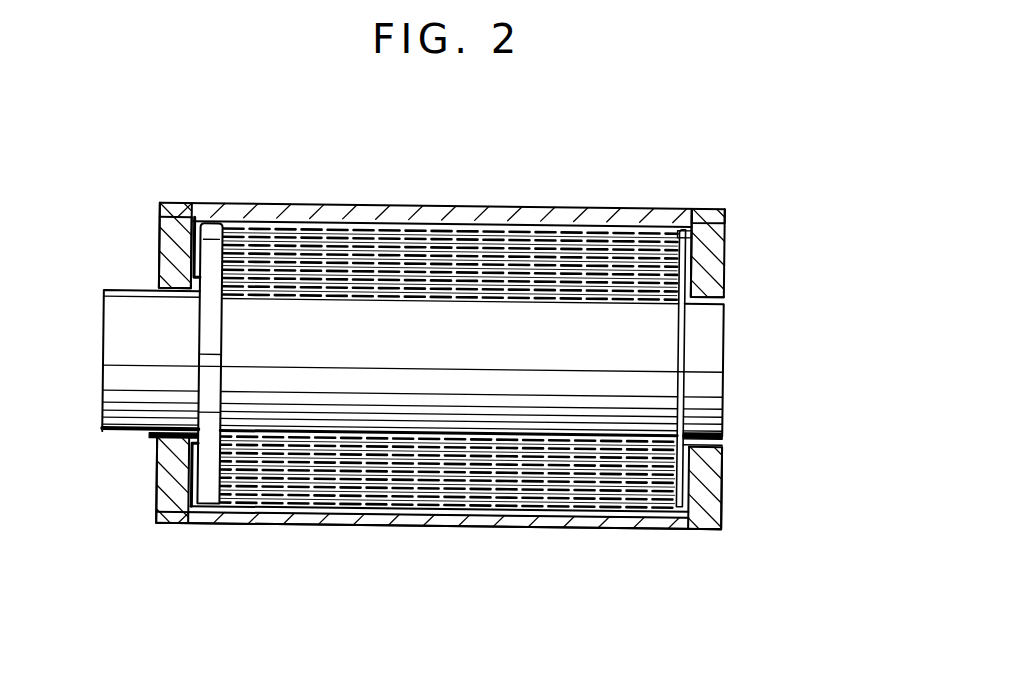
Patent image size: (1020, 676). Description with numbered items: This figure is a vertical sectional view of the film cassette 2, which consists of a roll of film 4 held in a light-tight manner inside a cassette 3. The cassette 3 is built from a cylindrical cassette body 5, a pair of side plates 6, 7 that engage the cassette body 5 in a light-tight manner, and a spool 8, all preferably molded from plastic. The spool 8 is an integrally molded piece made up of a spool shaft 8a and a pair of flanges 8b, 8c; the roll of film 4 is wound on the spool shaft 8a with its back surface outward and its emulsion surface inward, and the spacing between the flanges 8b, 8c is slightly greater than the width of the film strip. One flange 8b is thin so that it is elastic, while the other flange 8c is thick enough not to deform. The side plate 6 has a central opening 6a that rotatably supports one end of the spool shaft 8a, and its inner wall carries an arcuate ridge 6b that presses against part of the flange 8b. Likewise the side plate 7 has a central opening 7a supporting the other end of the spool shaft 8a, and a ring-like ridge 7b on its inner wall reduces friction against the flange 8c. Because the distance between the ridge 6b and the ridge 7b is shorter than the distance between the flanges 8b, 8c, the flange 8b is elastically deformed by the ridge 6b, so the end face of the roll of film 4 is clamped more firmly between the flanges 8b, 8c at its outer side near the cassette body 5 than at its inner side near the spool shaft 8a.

The film cassette 2 is at (291, 192).
The cassette 3 is at (589, 552).
The roll of film 4 is at (560, 235).
The cassette body 5 is at (336, 528).
The side plate 6 is at (725, 497).
The opening 6a is at (725, 432).
The arcuate ridge 6b is at (684, 232).
The side plate 7 is at (155, 512).
The opening 7a is at (152, 437).
The ring-like ridge 7b is at (157, 473).
The spool 8 is at (748, 390).
The spool shaft 8a is at (133, 308).
The flange 8b is at (690, 340).
The flange 8c is at (200, 382).